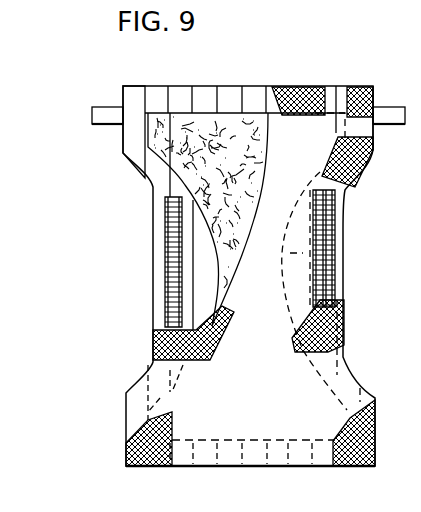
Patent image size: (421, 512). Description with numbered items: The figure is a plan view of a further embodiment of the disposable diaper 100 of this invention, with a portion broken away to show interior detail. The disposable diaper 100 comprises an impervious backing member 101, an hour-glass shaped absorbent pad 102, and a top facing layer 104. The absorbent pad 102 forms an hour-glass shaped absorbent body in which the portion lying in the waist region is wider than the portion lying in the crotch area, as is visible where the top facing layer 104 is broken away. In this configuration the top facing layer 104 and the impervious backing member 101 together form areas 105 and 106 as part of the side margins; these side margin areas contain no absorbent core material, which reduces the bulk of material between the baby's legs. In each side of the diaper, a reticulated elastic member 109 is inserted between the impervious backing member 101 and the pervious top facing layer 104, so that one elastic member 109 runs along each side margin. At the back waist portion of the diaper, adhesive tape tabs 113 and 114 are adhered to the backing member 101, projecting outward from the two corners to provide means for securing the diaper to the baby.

The disposable diaper 100 is at (150, 227).
The impervious backing member 101 is at (133, 100).
The hour-glass shaped absorbent pad 102 is at (192, 148).
The top facing layer 104 is at (345, 100).
The side margin area 105 is at (173, 195).
The side margin area 106 is at (345, 220).
The reticulated elastic member 109 is at (167, 293).
The adhesive tape tab 113 is at (100, 110).
The adhesive tape tab 114 is at (390, 112).